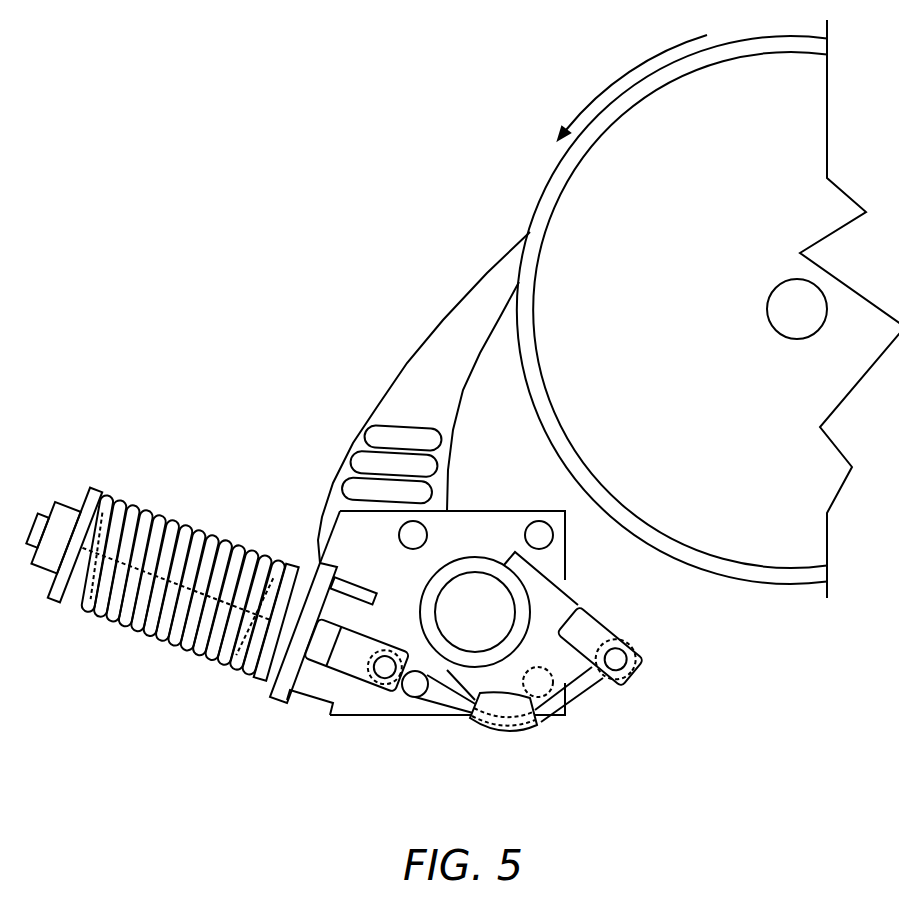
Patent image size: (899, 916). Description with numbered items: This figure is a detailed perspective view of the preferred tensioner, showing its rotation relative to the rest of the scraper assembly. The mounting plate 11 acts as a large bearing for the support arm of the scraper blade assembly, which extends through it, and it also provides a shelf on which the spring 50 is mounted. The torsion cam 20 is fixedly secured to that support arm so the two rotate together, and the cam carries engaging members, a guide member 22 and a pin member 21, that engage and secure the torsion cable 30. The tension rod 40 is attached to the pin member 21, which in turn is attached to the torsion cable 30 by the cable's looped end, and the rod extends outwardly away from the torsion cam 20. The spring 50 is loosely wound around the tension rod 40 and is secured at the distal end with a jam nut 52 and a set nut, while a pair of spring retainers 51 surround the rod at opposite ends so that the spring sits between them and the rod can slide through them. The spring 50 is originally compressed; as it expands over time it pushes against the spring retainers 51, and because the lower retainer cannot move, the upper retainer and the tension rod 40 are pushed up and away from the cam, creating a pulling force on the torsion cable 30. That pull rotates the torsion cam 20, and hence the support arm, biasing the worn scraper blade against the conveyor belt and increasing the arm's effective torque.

The mounting plate 11 is at (550, 560).
The torsion cam 20 is at (486, 617).
The pin member 21 is at (352, 673).
The guide member 22 is at (490, 732).
The torsion cable 30 is at (583, 690).
The tension rod 40 is at (32, 507).
The spring 50 is at (183, 523).
The spring retainers 51 is at (97, 490).
The jam nut 52 is at (38, 590).